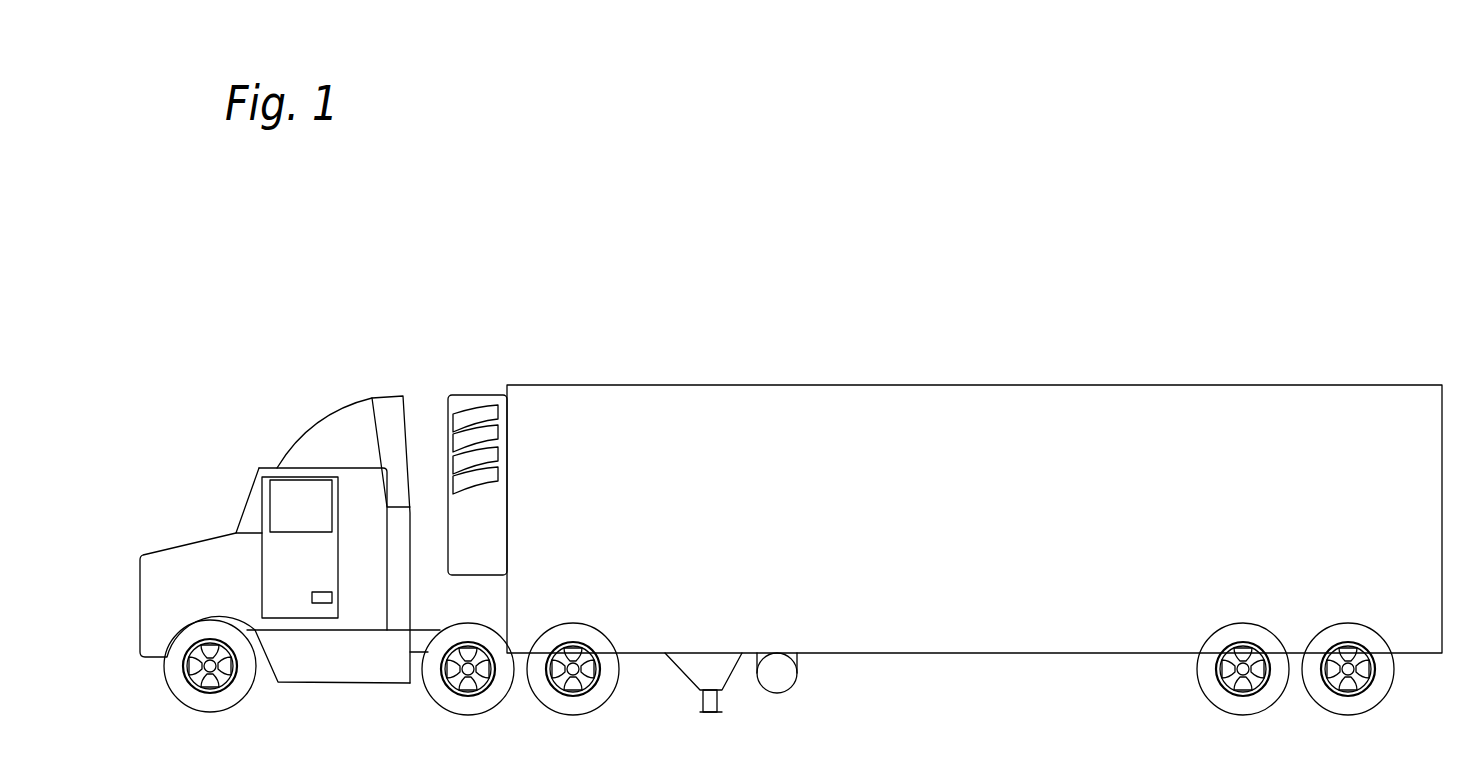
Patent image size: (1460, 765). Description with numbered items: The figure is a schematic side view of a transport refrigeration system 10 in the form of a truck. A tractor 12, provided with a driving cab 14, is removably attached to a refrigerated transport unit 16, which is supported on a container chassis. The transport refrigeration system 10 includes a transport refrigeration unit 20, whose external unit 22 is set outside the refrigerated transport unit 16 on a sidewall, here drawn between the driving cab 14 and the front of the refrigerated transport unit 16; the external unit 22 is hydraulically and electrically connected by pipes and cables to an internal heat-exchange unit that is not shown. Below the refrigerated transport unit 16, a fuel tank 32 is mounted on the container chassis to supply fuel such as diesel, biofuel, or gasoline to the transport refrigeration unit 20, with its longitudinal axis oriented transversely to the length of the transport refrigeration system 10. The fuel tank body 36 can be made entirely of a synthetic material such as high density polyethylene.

The transport refrigeration system 10 is at (950, 315).
The tractor 12 is at (320, 370).
The driving cab 14 is at (258, 465).
The refrigerated transport unit 16 is at (1068, 385).
The transport refrigeration unit 20 is at (433, 320).
The external unit 22 is at (477, 395).
The fuel tank 32 is at (788, 685).
The fuel tank body 36 is at (767, 694).